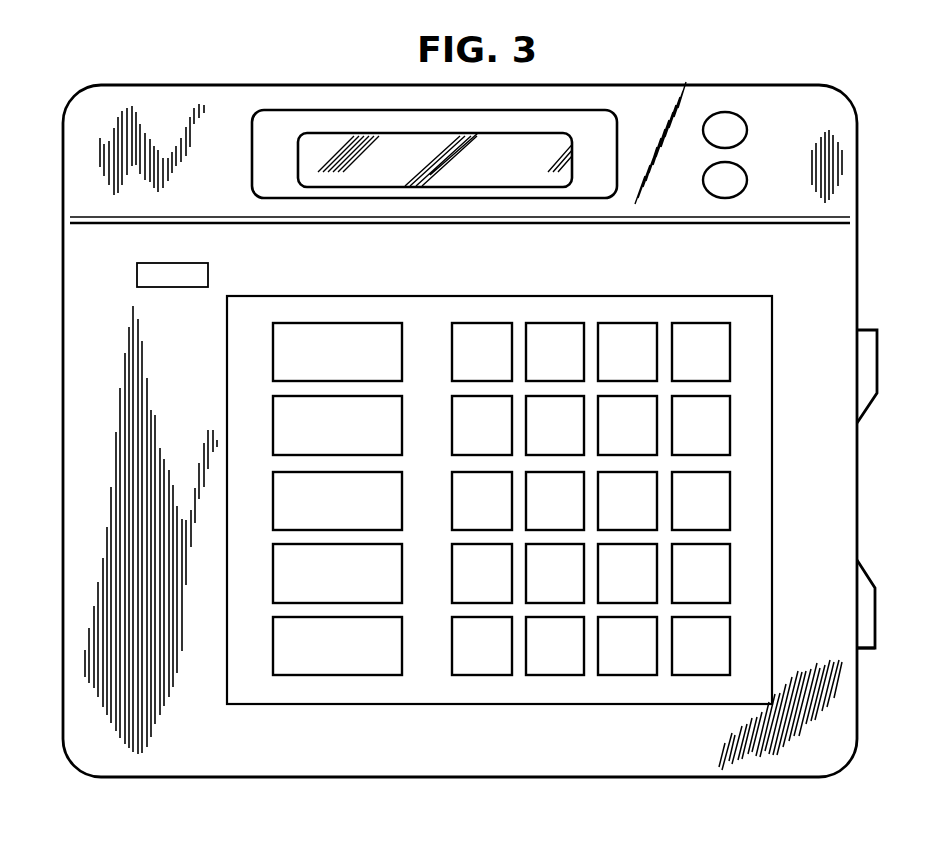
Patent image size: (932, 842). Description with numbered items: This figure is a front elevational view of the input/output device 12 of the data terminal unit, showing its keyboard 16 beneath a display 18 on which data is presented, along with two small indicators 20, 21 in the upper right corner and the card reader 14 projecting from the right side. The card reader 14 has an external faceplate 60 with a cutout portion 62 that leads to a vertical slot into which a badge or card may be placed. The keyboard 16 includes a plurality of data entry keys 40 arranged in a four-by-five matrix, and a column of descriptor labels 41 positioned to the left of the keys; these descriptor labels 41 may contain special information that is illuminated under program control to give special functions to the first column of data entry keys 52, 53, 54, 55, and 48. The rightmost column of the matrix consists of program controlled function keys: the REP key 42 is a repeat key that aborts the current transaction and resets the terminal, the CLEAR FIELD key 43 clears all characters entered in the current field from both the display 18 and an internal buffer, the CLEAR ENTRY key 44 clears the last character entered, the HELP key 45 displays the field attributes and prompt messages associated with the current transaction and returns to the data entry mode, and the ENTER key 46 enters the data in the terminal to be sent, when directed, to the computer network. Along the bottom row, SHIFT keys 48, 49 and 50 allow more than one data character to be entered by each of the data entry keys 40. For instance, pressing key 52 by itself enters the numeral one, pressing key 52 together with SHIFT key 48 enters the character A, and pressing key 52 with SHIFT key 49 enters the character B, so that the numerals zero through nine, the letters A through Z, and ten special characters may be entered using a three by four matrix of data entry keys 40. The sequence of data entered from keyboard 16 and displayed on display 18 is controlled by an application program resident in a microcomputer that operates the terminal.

The input/output device 12 is at (857, 270).
The card reader 14 is at (877, 358).
The keyboard 16 is at (322, 296).
The display 18 is at (312, 160).
The indicator lamp 20 is at (747, 130).
The indicator lamp 21 is at (747, 180).
The data entry keys 40 is at (613, 325).
The descriptor labels 41 is at (273, 645).
The REP key 42 is at (730, 350).
The CLEAR FIELD key 43 is at (730, 428).
The CLEAR ENTRY key 44 is at (730, 503).
The HELP key 45 is at (730, 575).
The ENTER key 46 is at (730, 645).
The SHIFT key 48 is at (482, 675).
The SHIFT key 49 is at (565, 675).
The SHIFT key 50 is at (625, 675).
The key 52 is at (452, 348).
The key 53 is at (452, 437).
The key 54 is at (452, 510).
The key 55 is at (452, 580).
The external faceplate 60 is at (865, 650).
The cutout portion 62 is at (868, 572).